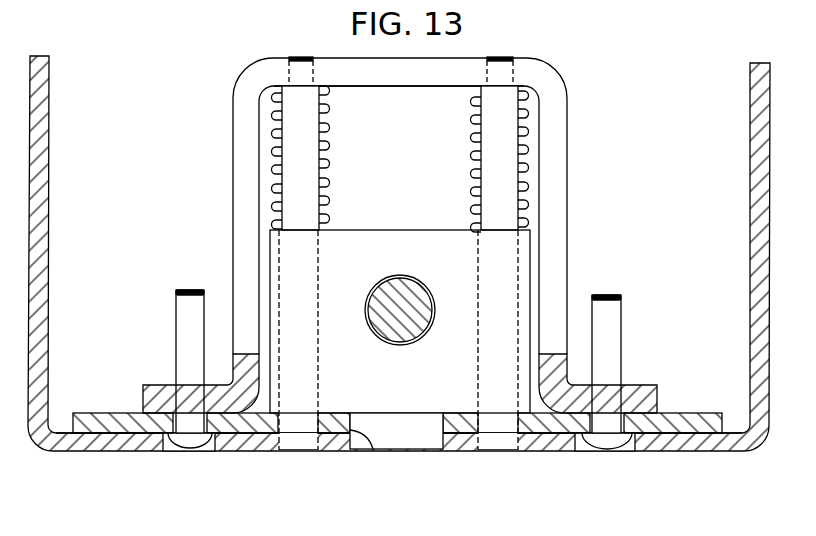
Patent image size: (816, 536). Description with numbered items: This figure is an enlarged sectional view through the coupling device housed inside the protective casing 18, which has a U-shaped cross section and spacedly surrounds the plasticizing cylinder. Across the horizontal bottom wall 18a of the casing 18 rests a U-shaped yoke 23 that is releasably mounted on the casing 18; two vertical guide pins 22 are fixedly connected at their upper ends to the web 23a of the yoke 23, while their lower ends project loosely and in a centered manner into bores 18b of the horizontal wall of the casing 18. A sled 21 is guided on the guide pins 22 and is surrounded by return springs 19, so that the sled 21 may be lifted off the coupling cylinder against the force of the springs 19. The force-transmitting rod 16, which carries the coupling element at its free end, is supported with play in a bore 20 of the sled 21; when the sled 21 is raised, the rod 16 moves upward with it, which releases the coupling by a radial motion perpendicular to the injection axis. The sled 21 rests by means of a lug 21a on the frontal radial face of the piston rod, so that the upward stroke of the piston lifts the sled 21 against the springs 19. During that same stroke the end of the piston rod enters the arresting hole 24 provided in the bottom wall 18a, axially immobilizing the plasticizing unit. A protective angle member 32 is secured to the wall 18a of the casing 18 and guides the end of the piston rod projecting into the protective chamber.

The force-transmitting rod 16 is at (382, 333).
The protective casing 18 is at (749, 121).
The horizontal bottom wall 18a is at (238, 446).
The bores 18b is at (282, 444).
The return springs 19 is at (268, 152).
The bore 20 is at (385, 290).
The sled 21 is at (457, 267).
The lug 21a is at (413, 427).
The guide pins 22 is at (302, 132).
The U-shaped yoke 23 is at (568, 178).
The web 23a is at (448, 72).
The arresting hole 24 is at (353, 428).
The protective angle member 32 is at (676, 418).